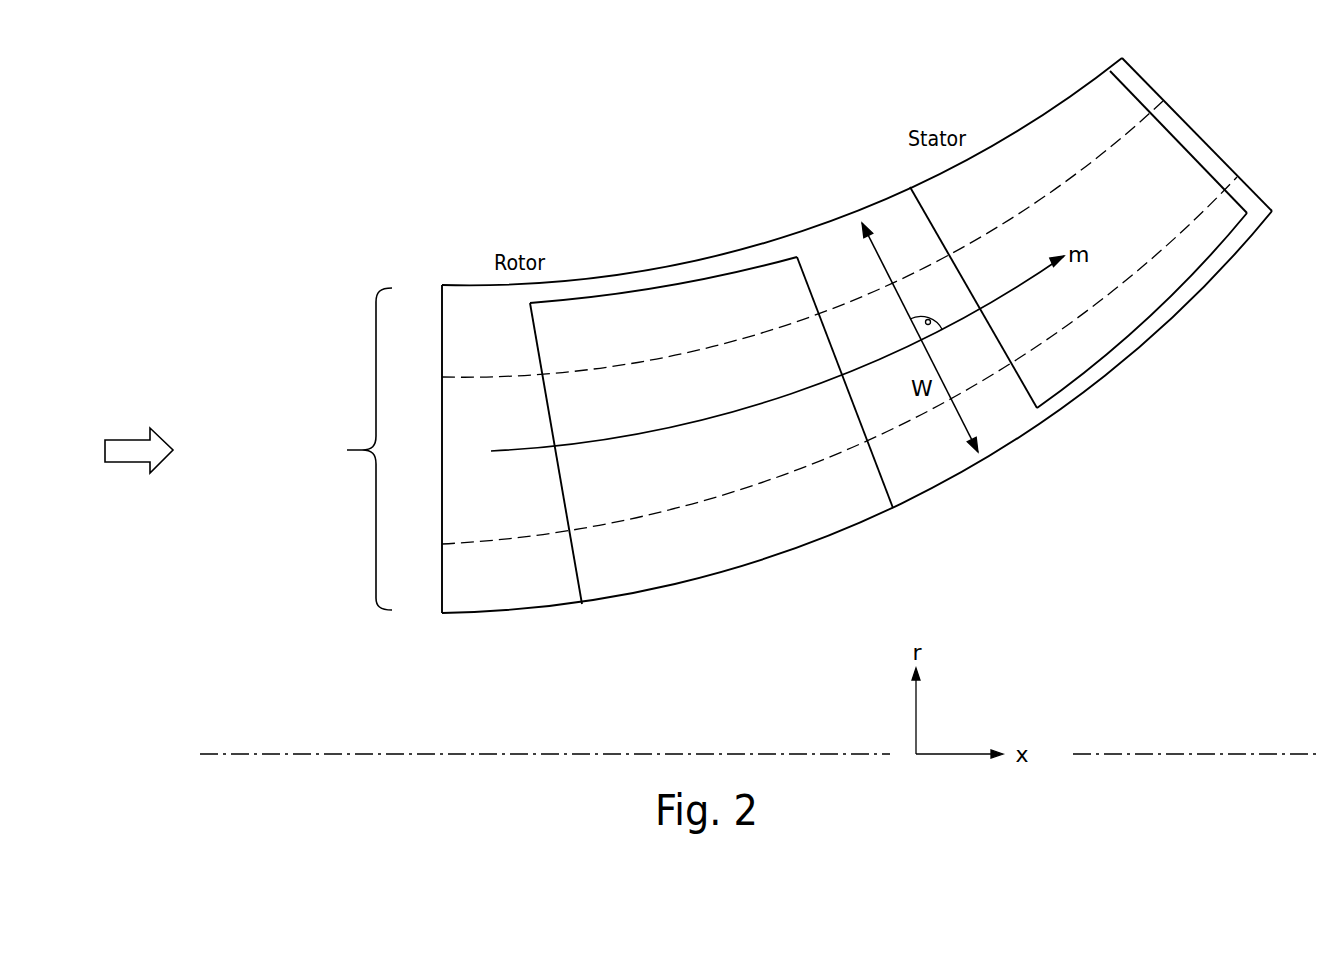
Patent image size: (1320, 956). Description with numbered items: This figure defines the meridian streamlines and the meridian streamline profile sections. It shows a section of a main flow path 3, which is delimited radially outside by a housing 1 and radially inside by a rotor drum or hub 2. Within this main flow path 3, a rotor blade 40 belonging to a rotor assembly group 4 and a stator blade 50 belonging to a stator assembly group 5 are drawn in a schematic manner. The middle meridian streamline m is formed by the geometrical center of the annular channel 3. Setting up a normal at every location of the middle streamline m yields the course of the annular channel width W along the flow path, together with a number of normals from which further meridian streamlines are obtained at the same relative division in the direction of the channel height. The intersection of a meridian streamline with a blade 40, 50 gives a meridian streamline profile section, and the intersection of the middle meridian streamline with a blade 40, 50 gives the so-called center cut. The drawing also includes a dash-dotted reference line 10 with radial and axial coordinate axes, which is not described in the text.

The housing 1 is at (813, 228).
The rotor drum or hub 2 is at (775, 556).
The main flow path 3 is at (496, 384).
The rotor assembly group 4 is at (568, 548).
The stator assembly group 5 is at (1188, 128).
The rotation axis 10 is at (1175, 756).
The rotor blade 40 is at (692, 372).
The stator blade 50 is at (1026, 138).